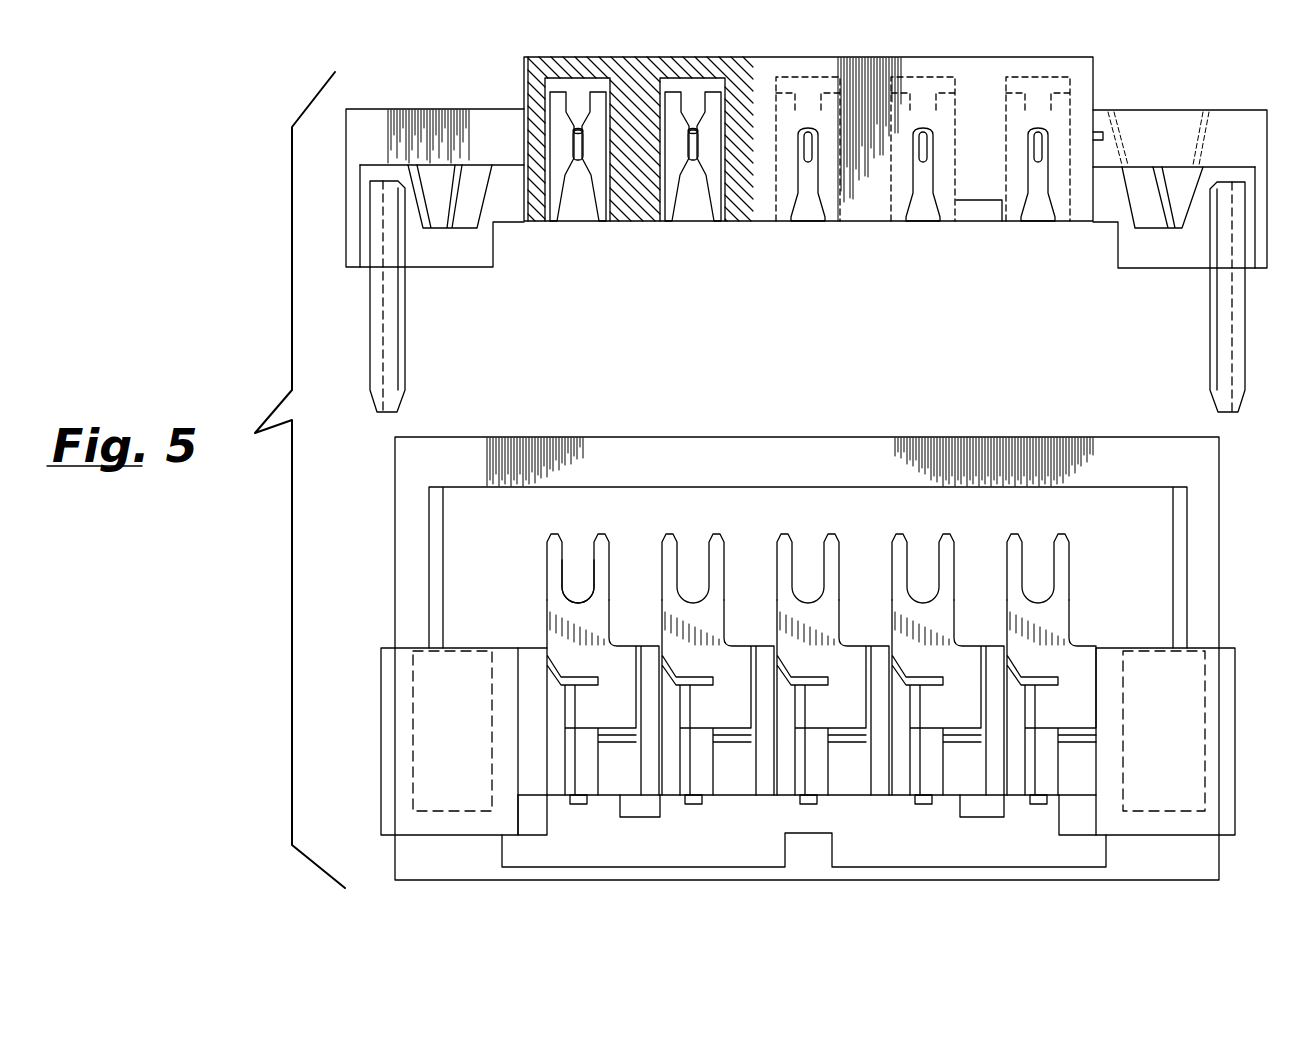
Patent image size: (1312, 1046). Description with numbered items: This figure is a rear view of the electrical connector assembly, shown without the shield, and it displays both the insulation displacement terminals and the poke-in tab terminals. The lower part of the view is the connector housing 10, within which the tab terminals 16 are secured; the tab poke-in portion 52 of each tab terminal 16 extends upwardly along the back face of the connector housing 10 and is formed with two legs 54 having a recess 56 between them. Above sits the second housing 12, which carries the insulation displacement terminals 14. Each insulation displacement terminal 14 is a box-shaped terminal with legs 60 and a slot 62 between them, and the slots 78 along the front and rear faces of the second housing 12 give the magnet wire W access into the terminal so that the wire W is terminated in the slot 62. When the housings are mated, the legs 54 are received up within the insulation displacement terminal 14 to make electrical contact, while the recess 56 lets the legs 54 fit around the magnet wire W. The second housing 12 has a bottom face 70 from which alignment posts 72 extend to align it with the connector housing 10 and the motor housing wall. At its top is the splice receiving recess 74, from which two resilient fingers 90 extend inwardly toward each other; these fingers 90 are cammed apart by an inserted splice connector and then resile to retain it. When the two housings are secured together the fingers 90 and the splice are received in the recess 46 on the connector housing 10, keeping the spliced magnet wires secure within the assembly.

The electrical connector housing 10 is at (368, 550).
The second electrical connector housing 12 is at (367, 98).
The insulation displacement terminal 14 is at (599, 233).
The tab terminal 16 is at (613, 722).
The recess 46 is at (414, 682).
The tab poke-in portion 52 is at (1059, 592).
The legs 54 is at (606, 549).
The recess 56 is at (581, 549).
The legs 60 is at (553, 214).
The slot 62 is at (580, 160).
The bottom face 70 is at (453, 268).
The alignment posts 72 is at (392, 353).
The splice receiving recess 74 is at (1180, 109).
The slots 78 is at (577, 133).
The fingers 90 is at (1192, 217).
The magnet wire W is at (690, 128).